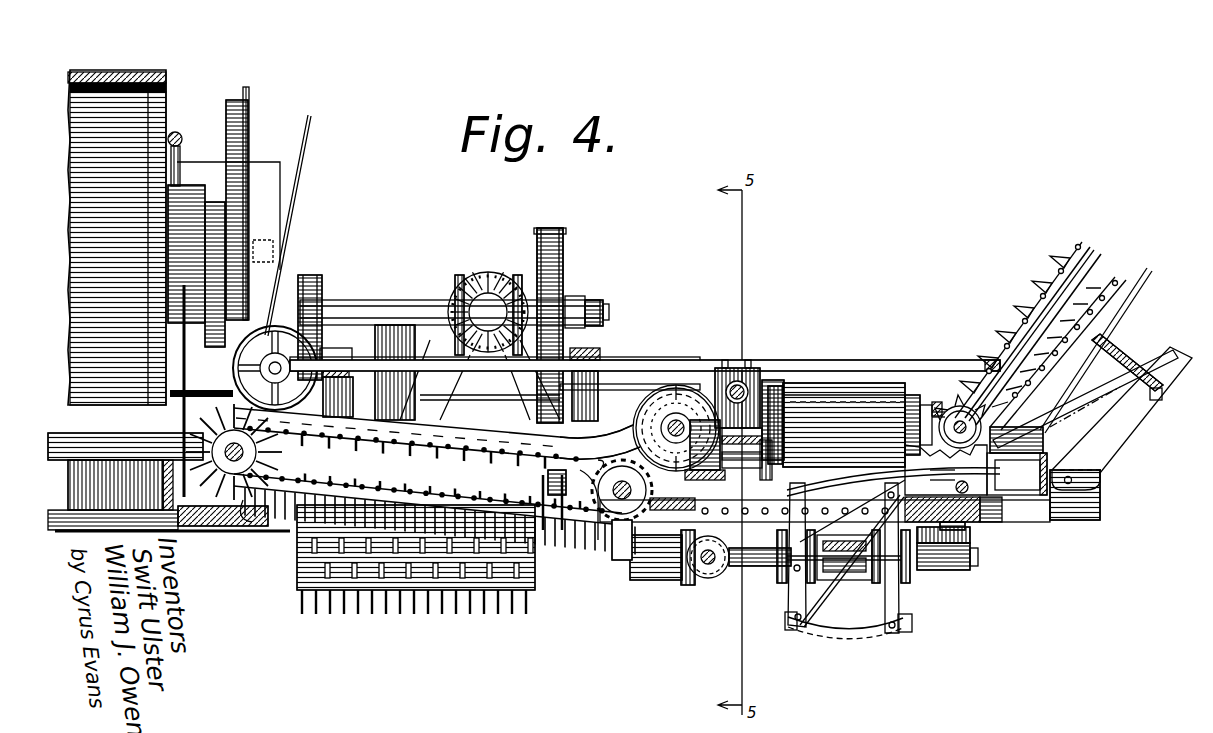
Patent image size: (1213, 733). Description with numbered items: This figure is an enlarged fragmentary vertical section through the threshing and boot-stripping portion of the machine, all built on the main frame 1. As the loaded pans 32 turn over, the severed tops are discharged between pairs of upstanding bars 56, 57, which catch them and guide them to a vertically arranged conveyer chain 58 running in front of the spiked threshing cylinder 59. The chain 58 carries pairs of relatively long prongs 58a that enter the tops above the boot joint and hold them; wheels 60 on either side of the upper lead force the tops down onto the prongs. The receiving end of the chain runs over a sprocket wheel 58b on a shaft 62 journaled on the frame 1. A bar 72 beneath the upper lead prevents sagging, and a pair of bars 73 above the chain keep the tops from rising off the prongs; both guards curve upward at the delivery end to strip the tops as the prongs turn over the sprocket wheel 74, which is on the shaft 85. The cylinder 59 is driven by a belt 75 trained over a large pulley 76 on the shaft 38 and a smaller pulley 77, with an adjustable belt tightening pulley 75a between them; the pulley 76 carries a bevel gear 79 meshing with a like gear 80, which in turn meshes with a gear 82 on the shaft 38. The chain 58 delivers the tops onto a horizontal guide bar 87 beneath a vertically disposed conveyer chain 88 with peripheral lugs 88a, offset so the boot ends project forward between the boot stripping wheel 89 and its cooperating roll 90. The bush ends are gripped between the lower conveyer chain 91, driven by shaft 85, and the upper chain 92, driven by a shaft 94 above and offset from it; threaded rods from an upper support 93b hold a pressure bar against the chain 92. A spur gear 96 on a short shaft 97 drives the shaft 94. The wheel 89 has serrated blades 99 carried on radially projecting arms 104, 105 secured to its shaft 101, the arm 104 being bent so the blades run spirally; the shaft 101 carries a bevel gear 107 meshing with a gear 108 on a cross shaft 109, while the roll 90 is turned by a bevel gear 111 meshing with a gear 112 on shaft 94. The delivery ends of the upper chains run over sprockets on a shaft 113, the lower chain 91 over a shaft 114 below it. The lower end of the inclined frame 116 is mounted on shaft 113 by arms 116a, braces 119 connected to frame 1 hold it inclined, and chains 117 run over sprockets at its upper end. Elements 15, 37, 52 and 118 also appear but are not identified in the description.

The frame 1 is at (1110, 510).
The side wall 15 is at (125, 70).
The pans 32 is at (250, 118).
The shaft 37 is at (395, 300).
The shaft 38 is at (609, 312).
The pulley 52 is at (306, 272).
The upstanding bar 56 is at (175, 377).
The upstanding bar 57 is at (304, 160).
The conveyer chain 58 is at (478, 455).
The prongs 58a is at (303, 500).
The sprocket wheel 58b is at (235, 520).
The threshing cylinder 59 is at (297, 580).
The wheels 60 is at (328, 330).
The shaft 62 is at (246, 456).
The bar 72 is at (450, 447).
The bars 73 is at (622, 434).
The sprocket wheel 74 is at (578, 530).
The belt 75 is at (560, 230).
The belt tightening pulley 75a is at (580, 348).
The large pulley 76 is at (565, 272).
The smaller pulley 77 is at (540, 535).
The bevel gear 79 is at (518, 275).
The gear 80 is at (490, 274).
The gear 82 is at (459, 275).
The shaft 85 is at (625, 495).
The horizontal guide bar 87 is at (600, 478).
The conveyer chain 88 is at (720, 468).
The peripheral lugs 88a is at (766, 466).
The boot stripping wheel 89 is at (862, 640).
The roll 90 is at (850, 383).
The conveyer chain 91 is at (762, 522).
The upper chain 92 is at (945, 408).
The upper support 93b is at (820, 383).
The shaft 94 is at (662, 404).
The spur gear 96 is at (775, 378).
The short shaft 97 is at (752, 372).
The blades 99 is at (880, 602).
The shaft 101 is at (980, 560).
The arm 104 is at (900, 603).
The arm 105 is at (792, 598).
The bevel gear 107 is at (684, 580).
The gear 108 is at (706, 578).
The cross shaft 109 is at (715, 562).
The bevel gear 111 is at (718, 380).
The gear 112 is at (680, 388).
The shaft 113 is at (978, 404).
The shaft 114 is at (970, 528).
The frame 116 is at (1135, 353).
The arms 116a is at (1110, 400).
The chains 117 is at (1091, 245).
The rail 118 is at (1140, 278).
The braces 119 is at (1118, 428).